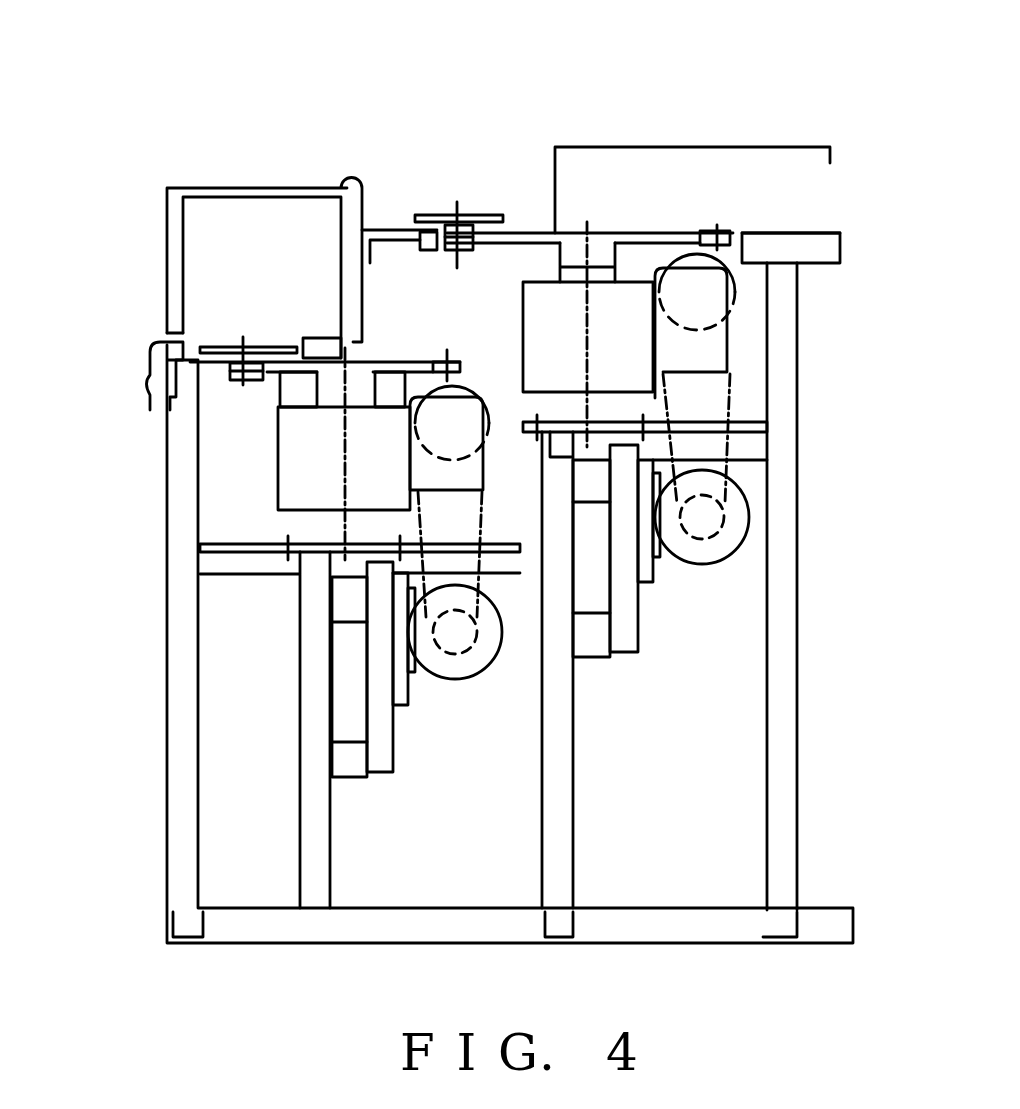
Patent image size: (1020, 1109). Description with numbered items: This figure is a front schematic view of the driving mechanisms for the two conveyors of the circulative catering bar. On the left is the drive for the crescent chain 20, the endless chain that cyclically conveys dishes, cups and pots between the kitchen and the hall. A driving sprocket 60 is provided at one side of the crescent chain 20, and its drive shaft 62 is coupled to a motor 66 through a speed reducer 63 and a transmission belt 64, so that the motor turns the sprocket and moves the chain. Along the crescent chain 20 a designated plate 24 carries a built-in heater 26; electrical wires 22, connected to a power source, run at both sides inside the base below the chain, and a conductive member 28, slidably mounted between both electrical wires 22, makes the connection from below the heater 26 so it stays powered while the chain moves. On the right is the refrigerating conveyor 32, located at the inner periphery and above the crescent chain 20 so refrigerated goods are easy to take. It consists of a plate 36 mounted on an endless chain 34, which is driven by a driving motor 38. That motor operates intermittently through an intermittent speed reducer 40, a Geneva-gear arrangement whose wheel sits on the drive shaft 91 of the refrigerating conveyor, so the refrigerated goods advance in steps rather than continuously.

The crescent chain 20 is at (232, 332).
The electrical wires 22 is at (290, 462).
The designated plate 24 is at (152, 393).
The heater 26 is at (200, 362).
The conductive member 28 is at (244, 385).
The refrigerating conveyor 32 is at (475, 207).
The endless chain 34 is at (423, 228).
The plate 36 is at (455, 213).
The driving motor 38 is at (752, 540).
The intermittent speed reducer 40 is at (655, 398).
The driving sprocket 60 is at (420, 452).
The drive shaft 62 is at (393, 573).
The speed reducer 63 is at (338, 385).
The transmission belt 64 is at (425, 605).
The motor 66 is at (453, 682).
The drive shaft of the refrigerating conveyor 91 is at (592, 370).